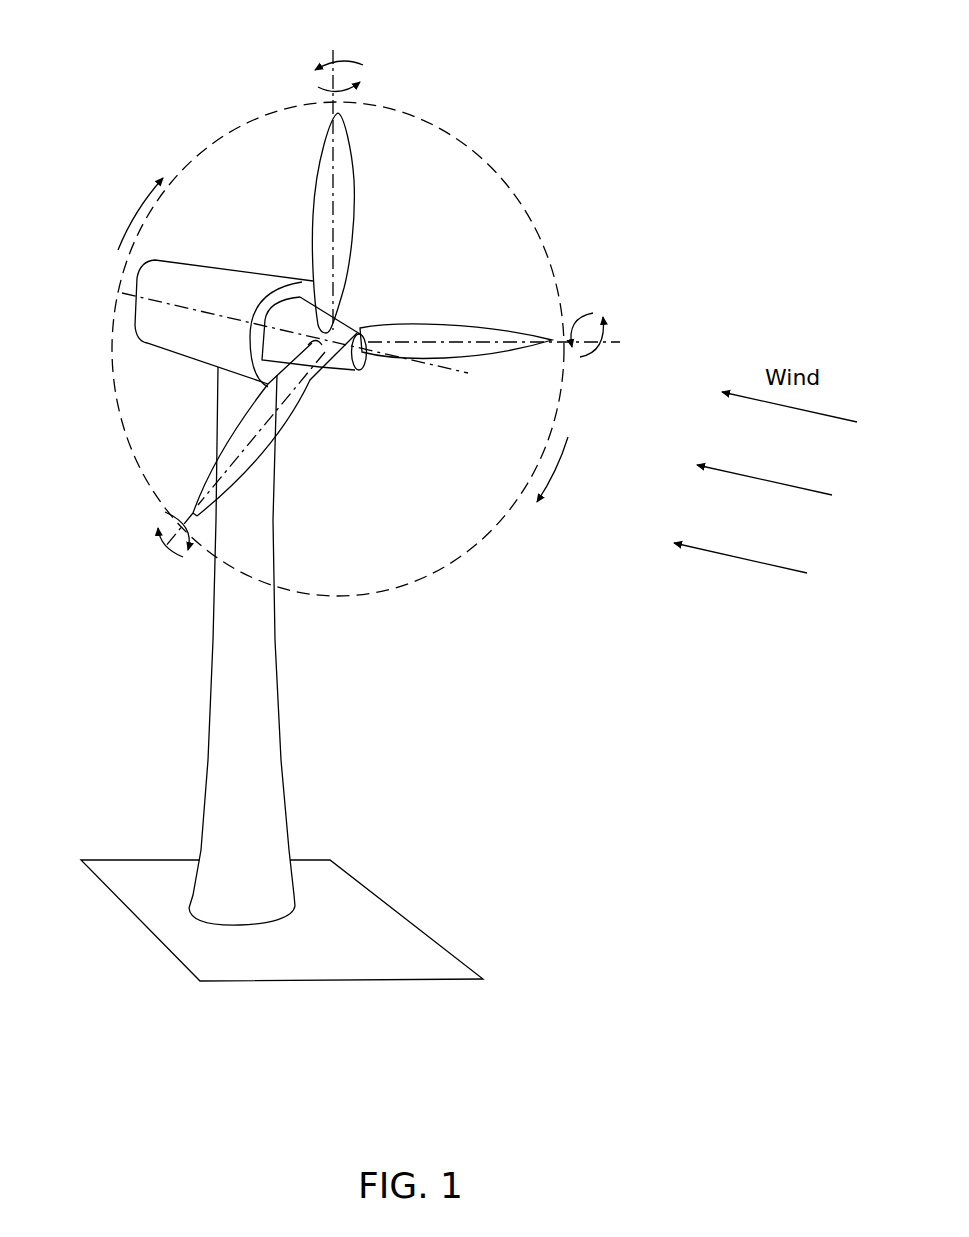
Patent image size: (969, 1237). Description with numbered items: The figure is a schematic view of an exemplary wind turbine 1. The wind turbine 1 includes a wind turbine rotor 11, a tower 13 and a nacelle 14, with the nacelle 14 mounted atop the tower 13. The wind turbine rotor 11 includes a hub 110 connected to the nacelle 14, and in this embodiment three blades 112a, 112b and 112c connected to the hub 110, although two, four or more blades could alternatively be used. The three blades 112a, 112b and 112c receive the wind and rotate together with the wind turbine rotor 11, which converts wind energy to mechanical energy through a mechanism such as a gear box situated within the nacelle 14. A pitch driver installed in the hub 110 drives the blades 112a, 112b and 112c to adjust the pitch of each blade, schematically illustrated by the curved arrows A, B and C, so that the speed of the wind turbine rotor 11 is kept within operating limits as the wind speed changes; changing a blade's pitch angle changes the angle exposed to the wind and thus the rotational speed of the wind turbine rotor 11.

The wind turbine 1 is at (188, 110).
The wind turbine rotor 11 is at (364, 305).
The tower 13 is at (268, 690).
The nacelle 14 is at (190, 277).
The hub 110 is at (340, 360).
The blade 112a is at (343, 213).
The blade 112b is at (445, 322).
The blade 112c is at (287, 417).